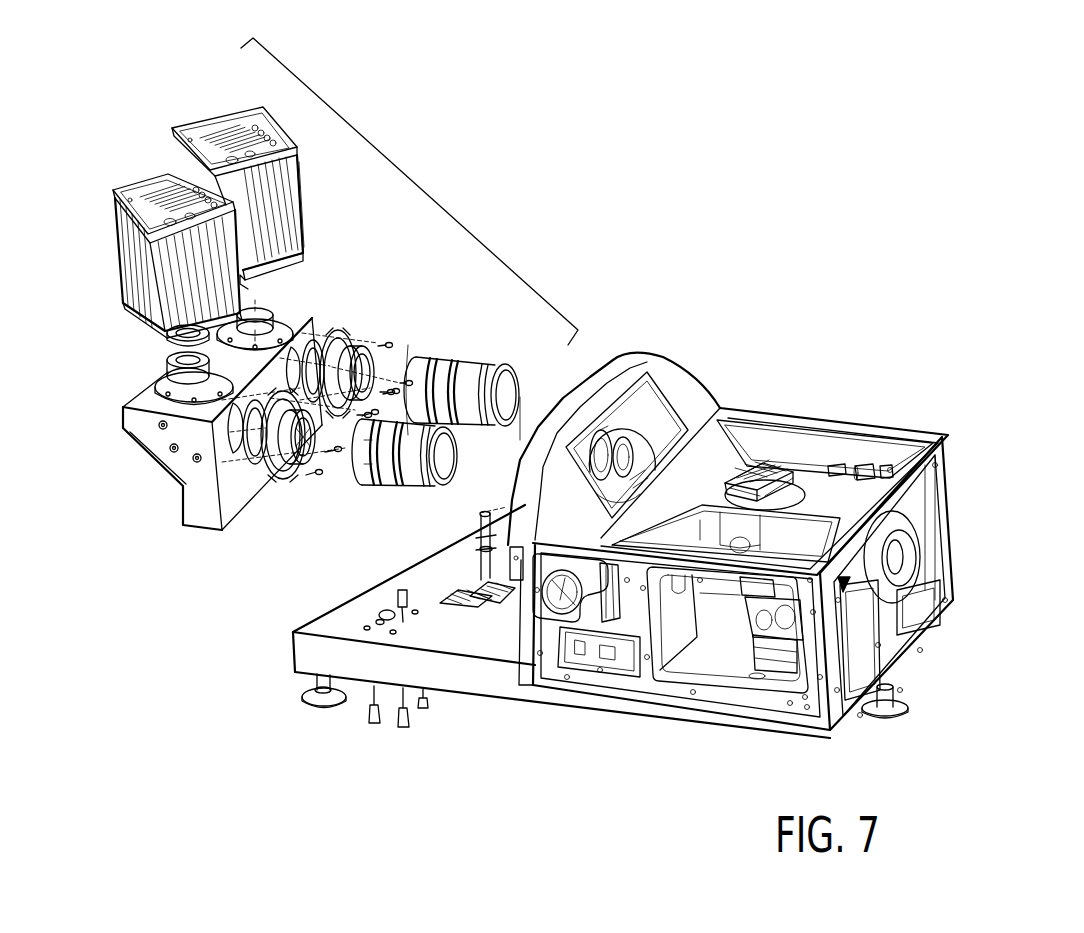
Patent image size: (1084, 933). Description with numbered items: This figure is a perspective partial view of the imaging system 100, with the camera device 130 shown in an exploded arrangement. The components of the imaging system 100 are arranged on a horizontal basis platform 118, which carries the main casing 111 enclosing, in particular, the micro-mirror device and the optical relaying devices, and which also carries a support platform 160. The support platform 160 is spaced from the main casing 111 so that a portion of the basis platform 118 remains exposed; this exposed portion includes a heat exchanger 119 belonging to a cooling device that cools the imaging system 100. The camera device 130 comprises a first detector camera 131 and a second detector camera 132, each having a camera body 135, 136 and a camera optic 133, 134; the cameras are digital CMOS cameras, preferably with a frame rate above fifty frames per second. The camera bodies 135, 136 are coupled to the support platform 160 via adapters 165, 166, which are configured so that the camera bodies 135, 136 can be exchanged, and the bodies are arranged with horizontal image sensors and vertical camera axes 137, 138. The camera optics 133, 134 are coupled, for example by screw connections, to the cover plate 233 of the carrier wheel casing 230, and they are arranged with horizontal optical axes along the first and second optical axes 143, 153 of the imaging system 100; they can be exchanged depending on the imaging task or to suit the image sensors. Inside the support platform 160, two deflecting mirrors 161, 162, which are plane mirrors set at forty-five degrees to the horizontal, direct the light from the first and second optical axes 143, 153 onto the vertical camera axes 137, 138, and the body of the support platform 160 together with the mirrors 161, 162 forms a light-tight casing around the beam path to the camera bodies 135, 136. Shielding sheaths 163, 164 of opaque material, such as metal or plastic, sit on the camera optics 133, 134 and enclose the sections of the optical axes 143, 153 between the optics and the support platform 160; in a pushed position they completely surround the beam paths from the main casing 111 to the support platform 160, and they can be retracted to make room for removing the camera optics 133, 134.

The imaging system 100 is at (708, 182).
The main casing 111 is at (722, 417).
The basis platform 118 is at (327, 628).
The heat exchanger 119 is at (460, 603).
The camera device 130 is at (481, 177).
The first detector camera 131 is at (145, 175).
The second detector camera 132 is at (227, 110).
The camera optic 133 is at (422, 460).
The camera optic 134 is at (507, 397).
The camera body 135 is at (135, 265).
The camera body 136 is at (288, 168).
The vertical camera axis 137 is at (173, 347).
The vertical camera axis 138 is at (284, 250).
The first optical axis 143 is at (265, 465).
The second optical axis 153 is at (378, 383).
The support platform 160 is at (191, 421).
The deflecting mirror 161 is at (152, 455).
The deflecting mirror 162 is at (298, 318).
The shielding sheath 163 is at (353, 458).
The shielding sheath 164 is at (432, 357).
The adapter 165 is at (168, 383).
The adapter 166 is at (287, 312).
The carrier wheel casing 230 is at (652, 348).
The cover plate 233 is at (507, 603).